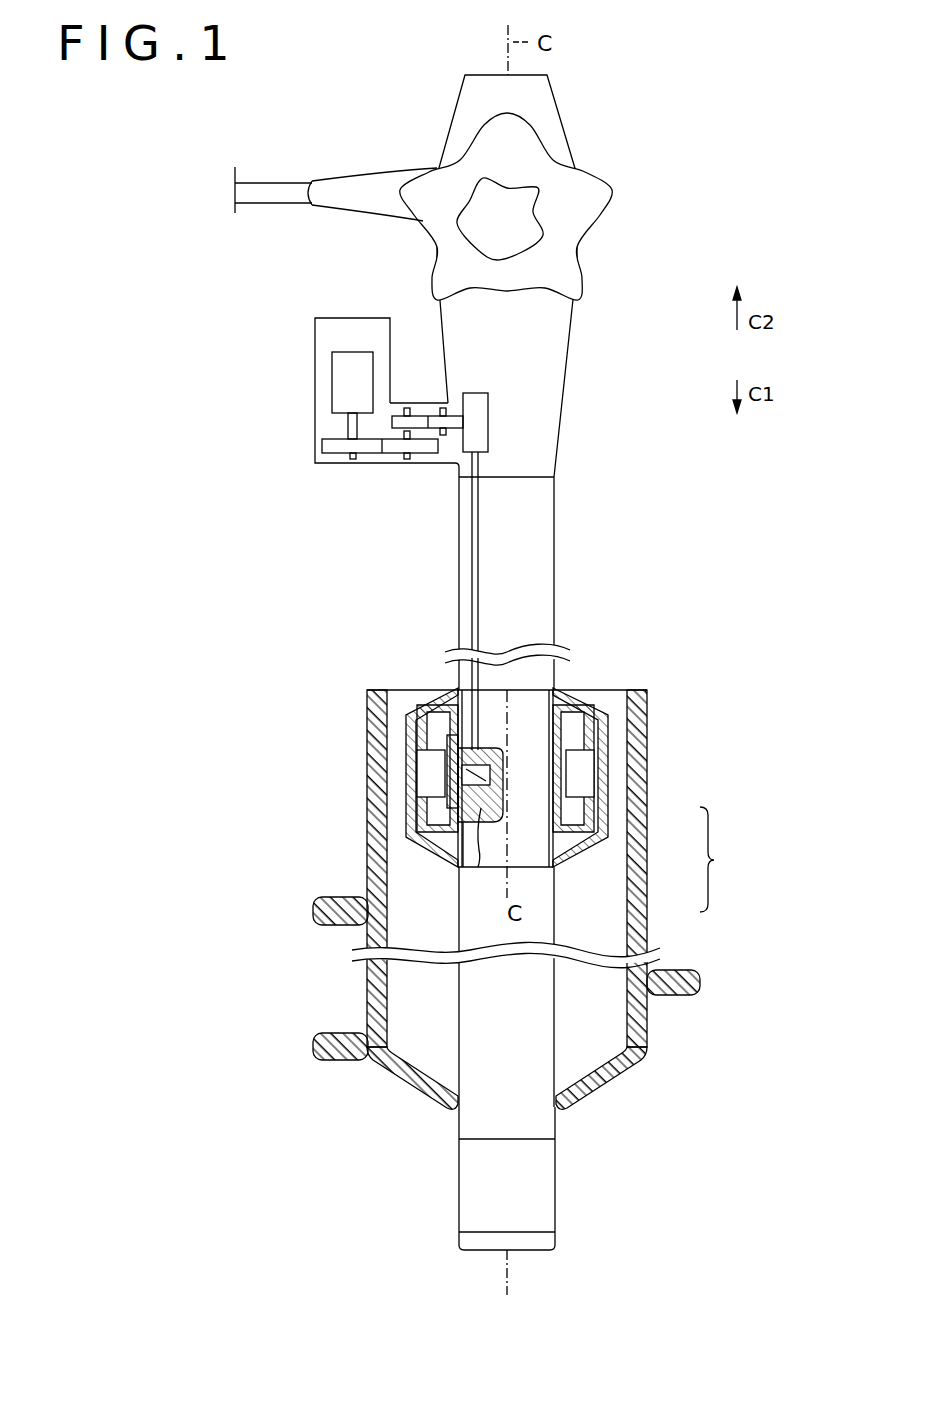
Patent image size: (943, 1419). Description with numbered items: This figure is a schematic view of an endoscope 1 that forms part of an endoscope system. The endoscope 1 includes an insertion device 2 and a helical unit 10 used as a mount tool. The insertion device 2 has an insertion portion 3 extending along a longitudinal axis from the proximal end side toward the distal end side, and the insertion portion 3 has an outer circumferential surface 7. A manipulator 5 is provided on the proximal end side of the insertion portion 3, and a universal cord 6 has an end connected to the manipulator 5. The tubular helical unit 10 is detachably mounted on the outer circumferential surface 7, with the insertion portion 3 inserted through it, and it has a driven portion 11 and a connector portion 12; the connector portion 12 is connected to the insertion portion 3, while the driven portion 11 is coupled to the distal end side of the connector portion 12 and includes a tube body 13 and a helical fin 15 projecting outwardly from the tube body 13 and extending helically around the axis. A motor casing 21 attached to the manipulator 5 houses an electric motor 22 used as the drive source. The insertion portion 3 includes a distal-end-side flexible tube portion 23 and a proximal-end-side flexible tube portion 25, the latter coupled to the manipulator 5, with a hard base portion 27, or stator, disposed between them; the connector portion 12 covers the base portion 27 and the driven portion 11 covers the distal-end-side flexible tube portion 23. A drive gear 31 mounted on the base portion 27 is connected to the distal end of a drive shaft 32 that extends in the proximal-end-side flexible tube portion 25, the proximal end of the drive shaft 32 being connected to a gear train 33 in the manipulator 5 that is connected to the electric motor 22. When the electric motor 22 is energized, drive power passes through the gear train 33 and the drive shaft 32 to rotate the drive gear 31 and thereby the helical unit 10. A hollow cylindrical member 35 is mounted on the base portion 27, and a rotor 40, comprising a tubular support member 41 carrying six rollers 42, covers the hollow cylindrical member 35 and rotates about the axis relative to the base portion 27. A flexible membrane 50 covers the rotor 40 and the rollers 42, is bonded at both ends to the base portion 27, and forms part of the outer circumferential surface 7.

The endoscope 1 is at (758, 192).
The insertion device 2 is at (660, 480).
The insertion portion 3 is at (560, 582).
The manipulator 5 is at (546, 373).
The universal cord 6 is at (347, 181).
The outer circumferential surface 7 is at (458, 1010).
The helical unit 10 is at (723, 859).
The driven portion 11 is at (648, 916).
The connector portion 12 is at (640, 828).
The tube body 13 is at (645, 1026).
The helical fin 15 is at (700, 983).
The motor casing 21 is at (355, 318).
The electric motor 22 is at (332, 388).
The distal-end-side flexible tube portion 23 is at (545, 1035).
The proximal-end-side flexible tube portion 25 is at (533, 624).
The base portion 27 is at (480, 852).
The drive gear 31 is at (492, 777).
The drive shaft 32 is at (479, 588).
The gear train 33 is at (396, 462).
The hollow cylindrical member 35 is at (464, 767).
The rotor 40 is at (600, 739).
The support member 41 is at (425, 808).
The rollers 42 is at (430, 772).
The membrane 50 is at (418, 740).